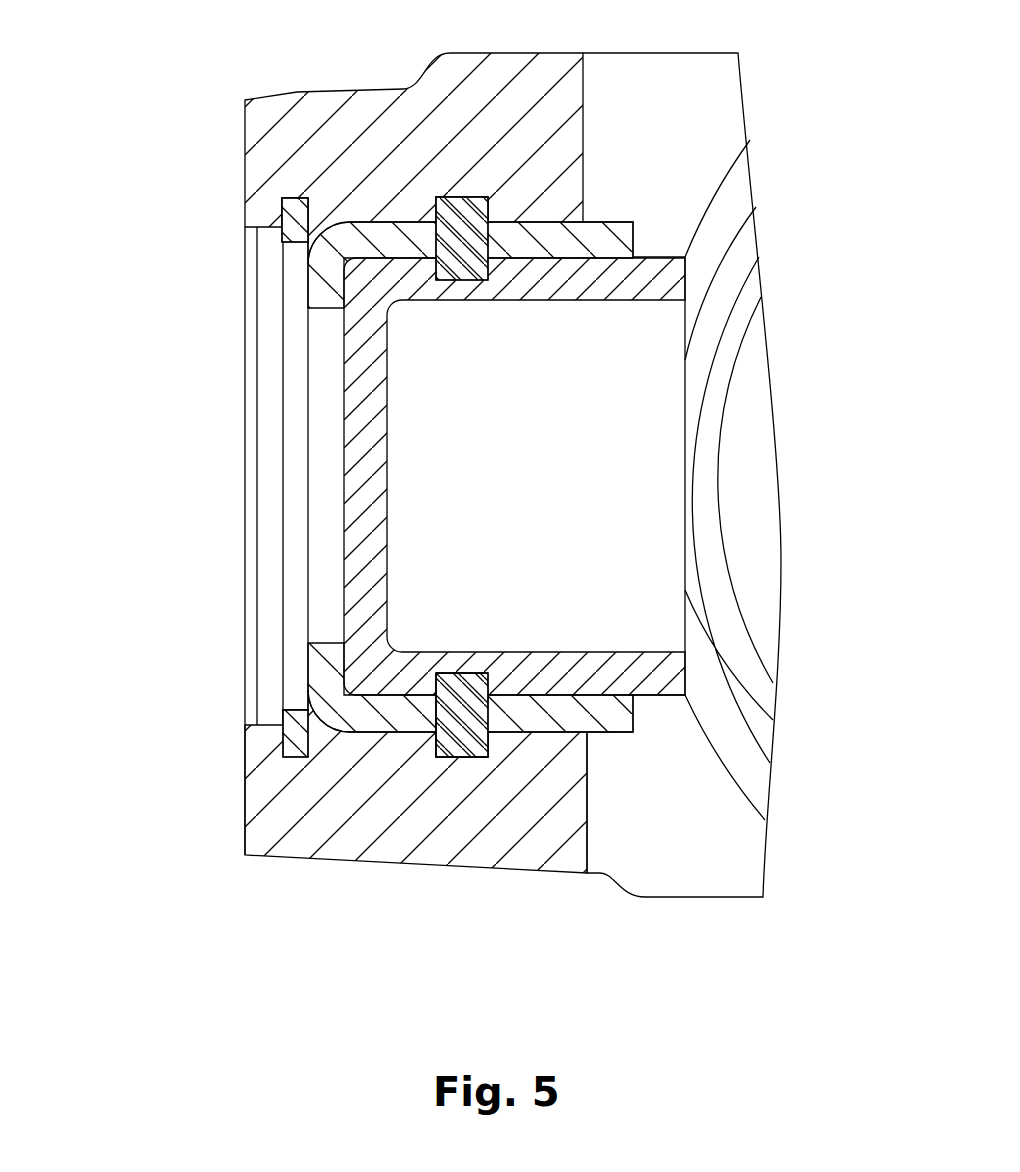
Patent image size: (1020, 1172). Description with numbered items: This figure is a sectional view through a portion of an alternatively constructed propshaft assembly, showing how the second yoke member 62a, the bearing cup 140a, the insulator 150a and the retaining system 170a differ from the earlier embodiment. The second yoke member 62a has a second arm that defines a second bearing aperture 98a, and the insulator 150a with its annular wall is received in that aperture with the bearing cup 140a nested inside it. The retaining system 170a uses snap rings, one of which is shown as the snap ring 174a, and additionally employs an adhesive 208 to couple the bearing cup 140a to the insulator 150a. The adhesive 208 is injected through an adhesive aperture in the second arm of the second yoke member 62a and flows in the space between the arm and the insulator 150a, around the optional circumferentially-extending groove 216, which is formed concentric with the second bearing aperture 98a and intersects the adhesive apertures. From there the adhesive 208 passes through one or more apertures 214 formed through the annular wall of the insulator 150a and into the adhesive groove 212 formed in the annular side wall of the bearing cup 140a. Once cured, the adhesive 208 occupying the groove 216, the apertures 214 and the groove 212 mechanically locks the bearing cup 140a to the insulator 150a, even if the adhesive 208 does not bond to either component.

The retaining system 170a is at (172, 153).
The insulator 150a is at (375, 232).
The snap ring 174a is at (300, 241).
The second yoke member 62a is at (715, 103).
The bearing cup 140a is at (547, 290).
The adhesive groove 212 is at (465, 672).
The aperture 214 is at (440, 713).
The adhesive 208 is at (475, 720).
The circumferentially-extending groove 216 is at (470, 757).
The second bearing aperture 98a is at (507, 850).